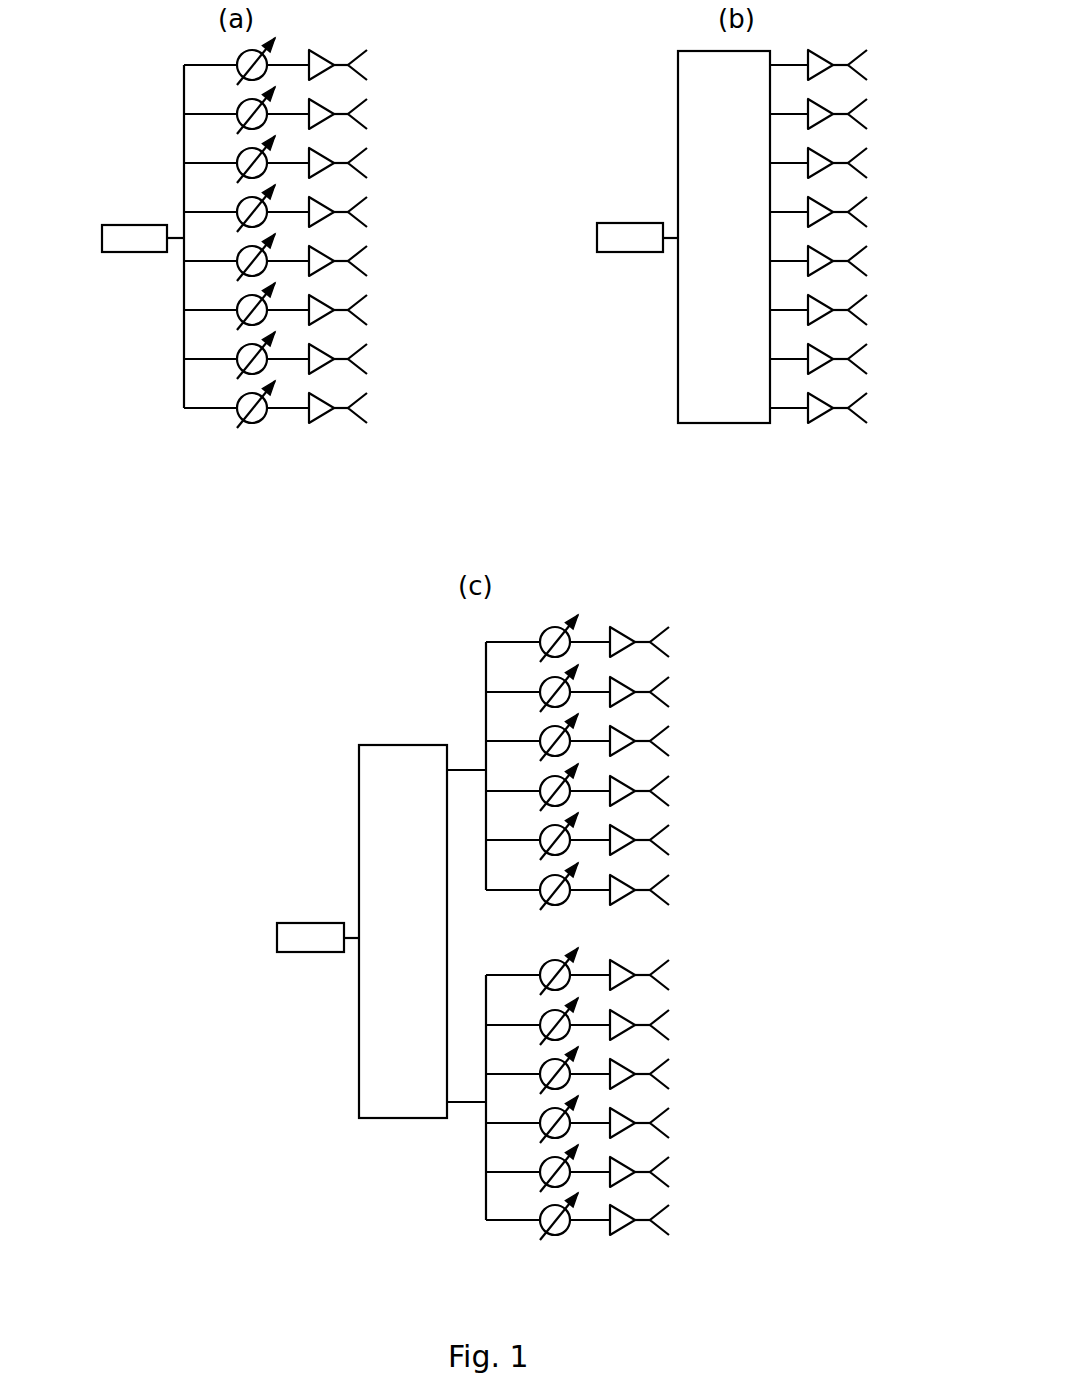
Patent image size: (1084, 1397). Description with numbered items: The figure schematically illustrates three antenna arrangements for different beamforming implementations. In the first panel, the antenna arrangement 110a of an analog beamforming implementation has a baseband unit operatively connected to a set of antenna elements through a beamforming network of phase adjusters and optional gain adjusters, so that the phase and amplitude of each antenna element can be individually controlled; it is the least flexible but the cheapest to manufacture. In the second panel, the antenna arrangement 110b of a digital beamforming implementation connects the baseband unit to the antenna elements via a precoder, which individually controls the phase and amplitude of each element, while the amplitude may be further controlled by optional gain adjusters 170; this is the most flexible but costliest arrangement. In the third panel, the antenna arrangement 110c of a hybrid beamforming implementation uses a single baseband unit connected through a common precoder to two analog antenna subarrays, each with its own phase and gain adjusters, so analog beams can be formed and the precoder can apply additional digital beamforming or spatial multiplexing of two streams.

The antenna arrangement 110a is at (150, 107).
The antenna arrangement 110b is at (620, 109).
The antenna arrangement 110c is at (343, 699).
The gain adjusters 170 is at (815, 422).